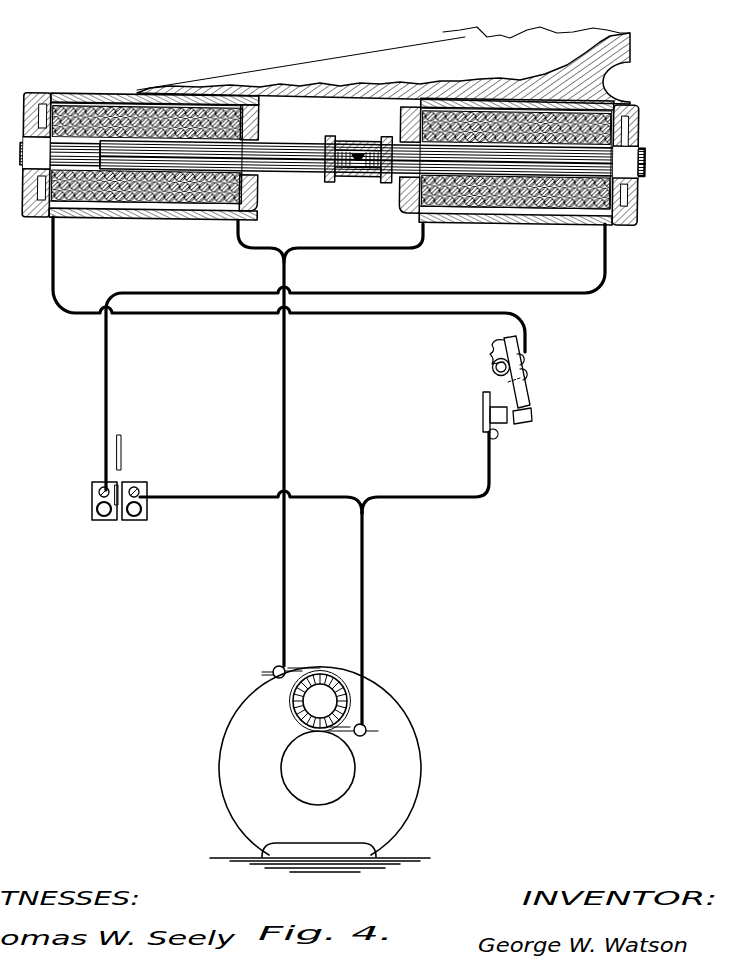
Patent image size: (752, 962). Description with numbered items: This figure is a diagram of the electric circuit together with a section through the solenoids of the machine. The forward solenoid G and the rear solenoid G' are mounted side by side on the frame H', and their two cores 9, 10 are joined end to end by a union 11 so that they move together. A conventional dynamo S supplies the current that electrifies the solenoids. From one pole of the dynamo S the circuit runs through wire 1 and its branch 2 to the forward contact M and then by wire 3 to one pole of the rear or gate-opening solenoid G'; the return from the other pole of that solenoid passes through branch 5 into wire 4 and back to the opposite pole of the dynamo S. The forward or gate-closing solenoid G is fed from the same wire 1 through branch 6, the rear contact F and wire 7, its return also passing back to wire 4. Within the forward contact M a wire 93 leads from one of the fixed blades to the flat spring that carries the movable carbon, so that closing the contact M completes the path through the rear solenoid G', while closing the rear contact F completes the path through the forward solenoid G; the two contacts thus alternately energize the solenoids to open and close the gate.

The frame H' is at (383, 54).
The rear solenoid G' is at (140, 132).
The forward solenoid G is at (531, 157).
The core 9 is at (642, 158).
The core 10 is at (290, 172).
The union 11 is at (357, 176).
The branch 5 is at (240, 243).
The wire 4 is at (280, 597).
The wire 7 is at (101, 393).
The wire 3 is at (423, 320).
The branch 6 is at (204, 493).
The branch 2 is at (492, 479).
The wire 1 is at (377, 607).
The wire 93 is at (491, 387).
The forward contact M is at (532, 364).
The rear contact F is at (90, 480).
The dynamo S is at (320, 769).